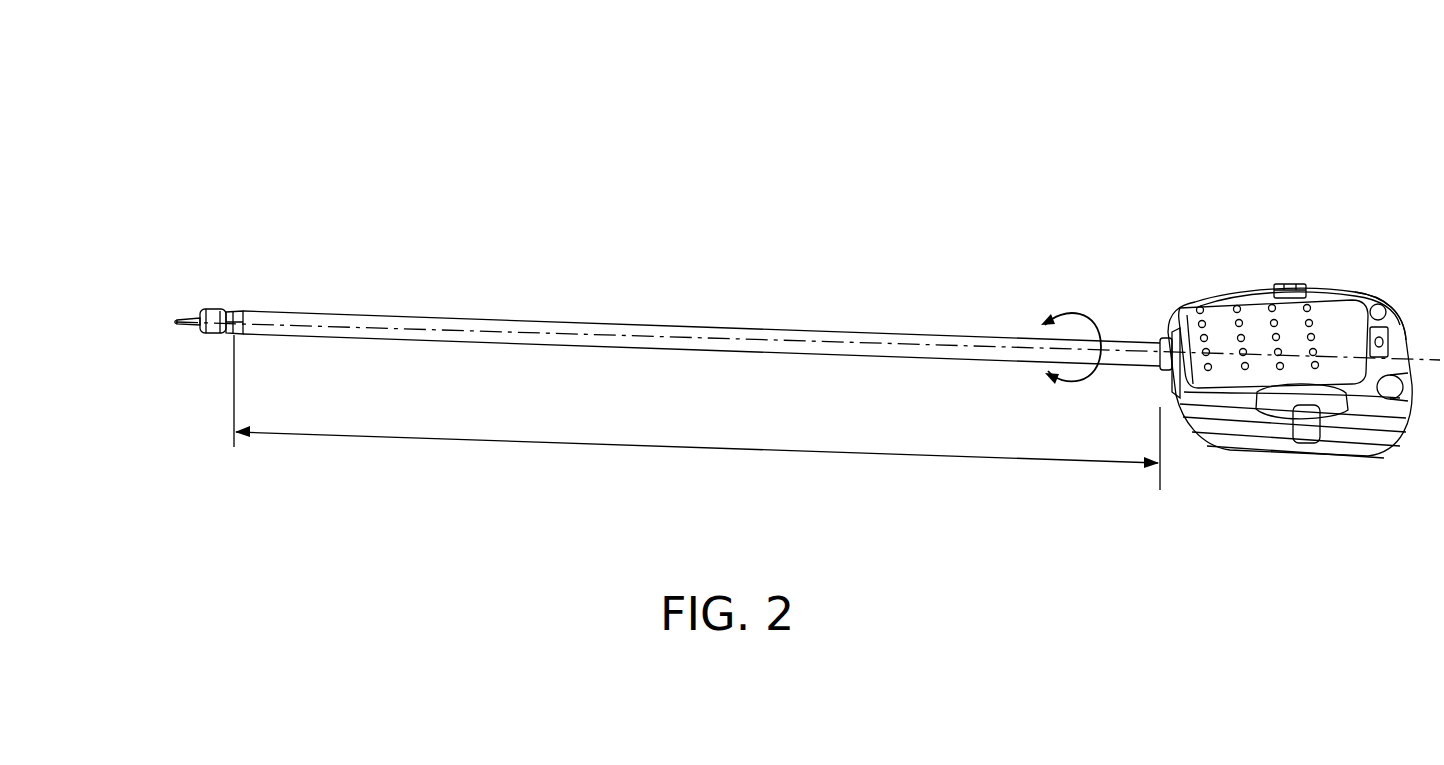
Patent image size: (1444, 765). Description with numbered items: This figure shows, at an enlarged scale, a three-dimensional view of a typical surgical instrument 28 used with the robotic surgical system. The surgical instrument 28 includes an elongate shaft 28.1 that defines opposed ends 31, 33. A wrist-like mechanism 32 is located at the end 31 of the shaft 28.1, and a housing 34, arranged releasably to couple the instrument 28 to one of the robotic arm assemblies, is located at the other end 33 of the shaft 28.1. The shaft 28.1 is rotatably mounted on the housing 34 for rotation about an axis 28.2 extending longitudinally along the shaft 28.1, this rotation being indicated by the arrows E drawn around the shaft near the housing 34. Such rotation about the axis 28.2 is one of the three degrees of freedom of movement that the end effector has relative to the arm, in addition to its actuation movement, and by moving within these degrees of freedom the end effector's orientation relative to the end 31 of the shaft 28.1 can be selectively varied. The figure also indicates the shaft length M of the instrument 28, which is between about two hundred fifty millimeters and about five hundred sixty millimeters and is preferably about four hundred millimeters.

The surgical instrument 28 is at (821, 143).
The elongate shaft 28.1 is at (818, 333).
The axis 28.2 is at (572, 332).
The end 31 is at (247, 280).
The wrist-like mechanism 32 is at (214, 340).
The end 33 is at (1147, 311).
The housing 34 is at (1366, 300).
The arrows E is at (1083, 316).
The shaft length M is at (875, 456).